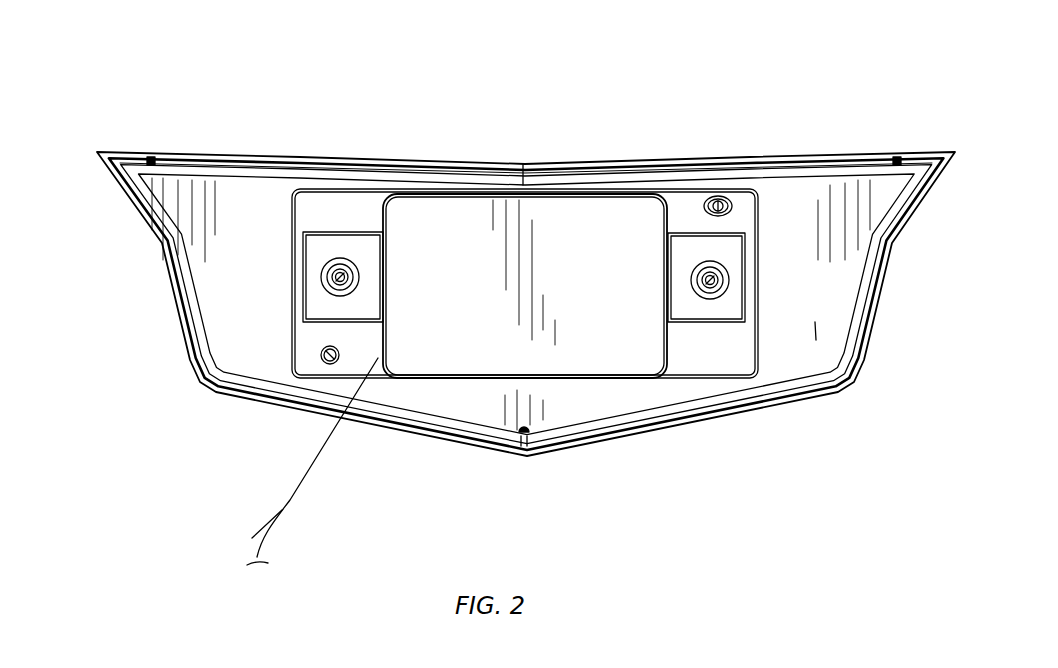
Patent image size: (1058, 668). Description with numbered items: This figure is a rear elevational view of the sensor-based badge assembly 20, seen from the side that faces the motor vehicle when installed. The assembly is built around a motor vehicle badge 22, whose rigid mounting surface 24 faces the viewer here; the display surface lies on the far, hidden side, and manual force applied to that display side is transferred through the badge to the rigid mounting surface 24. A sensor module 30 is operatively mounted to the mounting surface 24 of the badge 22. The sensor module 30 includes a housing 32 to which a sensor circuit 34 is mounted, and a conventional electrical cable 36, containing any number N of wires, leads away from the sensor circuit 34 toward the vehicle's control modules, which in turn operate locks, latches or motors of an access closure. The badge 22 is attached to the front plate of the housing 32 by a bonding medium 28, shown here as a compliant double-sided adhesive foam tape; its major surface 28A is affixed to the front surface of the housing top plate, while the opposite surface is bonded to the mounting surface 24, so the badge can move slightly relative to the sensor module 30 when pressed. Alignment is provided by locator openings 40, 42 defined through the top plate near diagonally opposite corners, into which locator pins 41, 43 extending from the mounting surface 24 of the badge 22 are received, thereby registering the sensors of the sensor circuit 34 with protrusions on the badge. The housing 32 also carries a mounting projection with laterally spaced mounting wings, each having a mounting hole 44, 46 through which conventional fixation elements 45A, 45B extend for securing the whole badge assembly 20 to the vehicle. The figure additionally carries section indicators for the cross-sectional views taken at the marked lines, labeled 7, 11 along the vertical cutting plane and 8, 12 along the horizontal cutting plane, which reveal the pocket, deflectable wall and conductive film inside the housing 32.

The badge assembly 20 is at (148, 118).
The motor vehicle badge 22 is at (848, 383).
The mounting surface 24 is at (920, 175).
The bonding medium 28 is at (845, 294).
The major surface of bonding medium 28A is at (818, 332).
The sensor module 30 is at (628, 385).
The housing 32 is at (742, 383).
The sensor circuit 34 is at (619, 210).
The electrical cable 36 is at (258, 545).
The locator opening 40 is at (700, 212).
The locator pin 41 is at (722, 203).
The locator opening 42 is at (330, 363).
The locator pin 43 is at (325, 350).
The mounting hole 44 is at (712, 293).
The fixation element 45A is at (728, 300).
The fixation element 45B is at (330, 288).
The mounting hole 46 is at (340, 258).
The section line 7- 7 is at (437, 160).
The section line 11- 11 is at (437, 440).
The section line 8- 8 is at (292, 275).
The section line 12- 12 is at (792, 278).